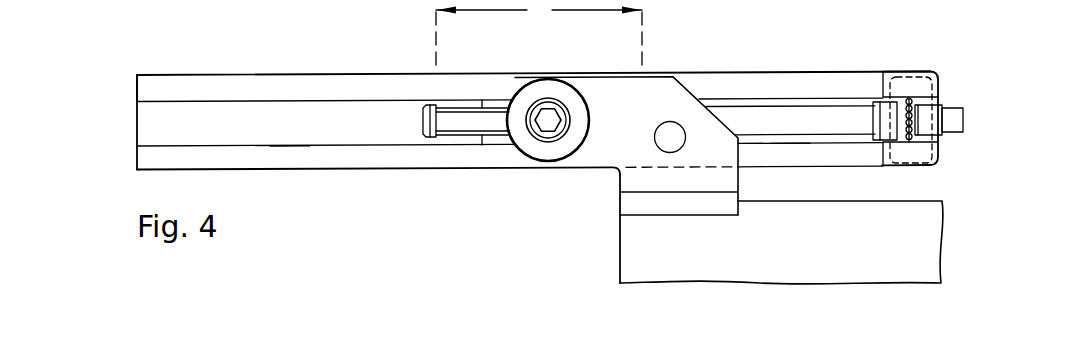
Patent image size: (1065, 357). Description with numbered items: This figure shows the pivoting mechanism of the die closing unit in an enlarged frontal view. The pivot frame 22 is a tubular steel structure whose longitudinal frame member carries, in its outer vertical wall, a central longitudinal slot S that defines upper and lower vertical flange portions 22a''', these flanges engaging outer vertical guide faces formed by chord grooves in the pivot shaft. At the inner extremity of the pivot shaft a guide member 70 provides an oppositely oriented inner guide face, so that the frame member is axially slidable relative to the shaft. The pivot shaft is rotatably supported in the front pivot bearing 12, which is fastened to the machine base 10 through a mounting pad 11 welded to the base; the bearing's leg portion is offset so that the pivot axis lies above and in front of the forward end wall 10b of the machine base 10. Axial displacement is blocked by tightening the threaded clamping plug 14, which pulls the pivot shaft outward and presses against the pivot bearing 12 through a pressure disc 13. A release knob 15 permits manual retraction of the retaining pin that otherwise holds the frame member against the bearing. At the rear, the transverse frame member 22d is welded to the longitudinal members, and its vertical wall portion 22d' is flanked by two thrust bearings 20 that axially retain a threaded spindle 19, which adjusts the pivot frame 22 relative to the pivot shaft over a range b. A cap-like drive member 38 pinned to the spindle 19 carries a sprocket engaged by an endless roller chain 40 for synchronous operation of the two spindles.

The machine base 10 is at (735, 258).
The forward end wall of the machine base 10b is at (617, 268).
The mounting pad 11 is at (652, 202).
The front pivot bearing 12 is at (655, 97).
The pressure disc 13 is at (549, 148).
The clamping plug 14 is at (547, 124).
The release knob 15 is at (665, 137).
The spindle 19 is at (767, 117).
The thrust bearing 20 is at (900, 143).
The pivot frame 22 is at (373, 62).
The vertical flange portion of the longitudinal frame member 22a''' is at (89, 91).
The transverse frame member 22d is at (956, 106).
The vertical wall portion of the transverse frame member 22d' is at (884, 81).
The drive member 38 is at (955, 125).
The endless roller chain 40 is at (903, 148).
The guide member 70 is at (491, 139).
The longitudinal slot S is at (291, 128).
The adjustment range b is at (539, 33).